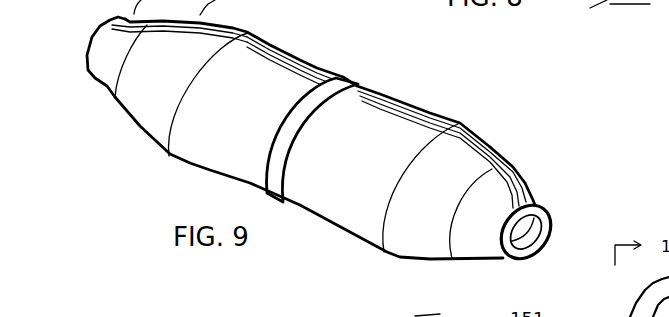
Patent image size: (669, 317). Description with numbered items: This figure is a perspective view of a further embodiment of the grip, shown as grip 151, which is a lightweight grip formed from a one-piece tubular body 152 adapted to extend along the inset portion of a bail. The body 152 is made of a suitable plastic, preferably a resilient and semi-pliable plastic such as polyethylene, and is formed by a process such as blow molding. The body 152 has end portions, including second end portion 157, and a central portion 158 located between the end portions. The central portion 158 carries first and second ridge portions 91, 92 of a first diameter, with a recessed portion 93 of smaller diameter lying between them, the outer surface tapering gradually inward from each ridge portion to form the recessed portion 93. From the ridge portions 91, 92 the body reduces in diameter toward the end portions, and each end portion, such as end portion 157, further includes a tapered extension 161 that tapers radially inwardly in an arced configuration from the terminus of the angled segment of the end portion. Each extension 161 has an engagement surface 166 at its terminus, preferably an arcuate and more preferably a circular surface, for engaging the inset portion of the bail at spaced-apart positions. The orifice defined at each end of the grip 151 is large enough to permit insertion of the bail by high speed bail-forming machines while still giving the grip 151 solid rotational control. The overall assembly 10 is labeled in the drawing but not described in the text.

The device 10 is at (159, 78).
The first ridge portion 91 is at (243, 28).
The recessed portion 93 is at (372, 85).
The second ridge portion 92 is at (458, 123).
The grip 151 is at (518, 175).
The tubular body 152 is at (424, 106).
The central portion 158 is at (325, 205).
The second end portion 157 is at (412, 252).
The tapered extension 161 is at (539, 176).
The engagement surface 166 is at (539, 233).